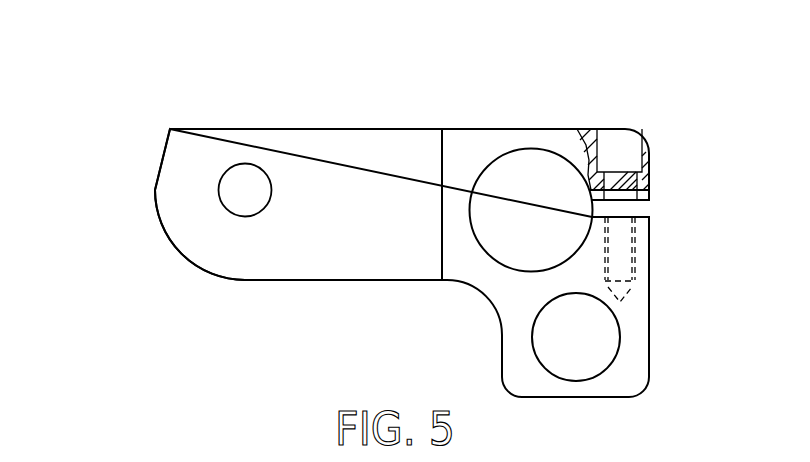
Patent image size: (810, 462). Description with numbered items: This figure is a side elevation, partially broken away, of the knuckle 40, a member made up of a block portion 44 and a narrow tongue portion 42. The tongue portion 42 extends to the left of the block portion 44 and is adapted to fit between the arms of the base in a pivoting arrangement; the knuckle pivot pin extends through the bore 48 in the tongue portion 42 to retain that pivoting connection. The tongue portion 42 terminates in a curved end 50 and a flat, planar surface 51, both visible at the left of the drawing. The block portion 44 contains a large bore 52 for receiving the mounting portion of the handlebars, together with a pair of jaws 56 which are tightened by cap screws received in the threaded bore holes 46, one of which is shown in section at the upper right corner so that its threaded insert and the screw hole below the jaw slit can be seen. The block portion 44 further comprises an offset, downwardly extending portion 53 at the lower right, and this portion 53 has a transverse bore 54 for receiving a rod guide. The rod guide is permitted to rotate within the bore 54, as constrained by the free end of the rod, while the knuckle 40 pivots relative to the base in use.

The knuckle 40 is at (424, 78).
The tongue portion 42 is at (202, 129).
The block portion 44 is at (478, 128).
The threaded bore holes 46 is at (617, 147).
The bore 48 is at (245, 190).
The curved end 50 is at (170, 240).
The flat, planar surface 51 is at (162, 160).
The bore 52 is at (531, 210).
The offset, downwardly extending portion 53 is at (650, 323).
The transverse bore 54 is at (577, 338).
The jaws 56 is at (650, 247).